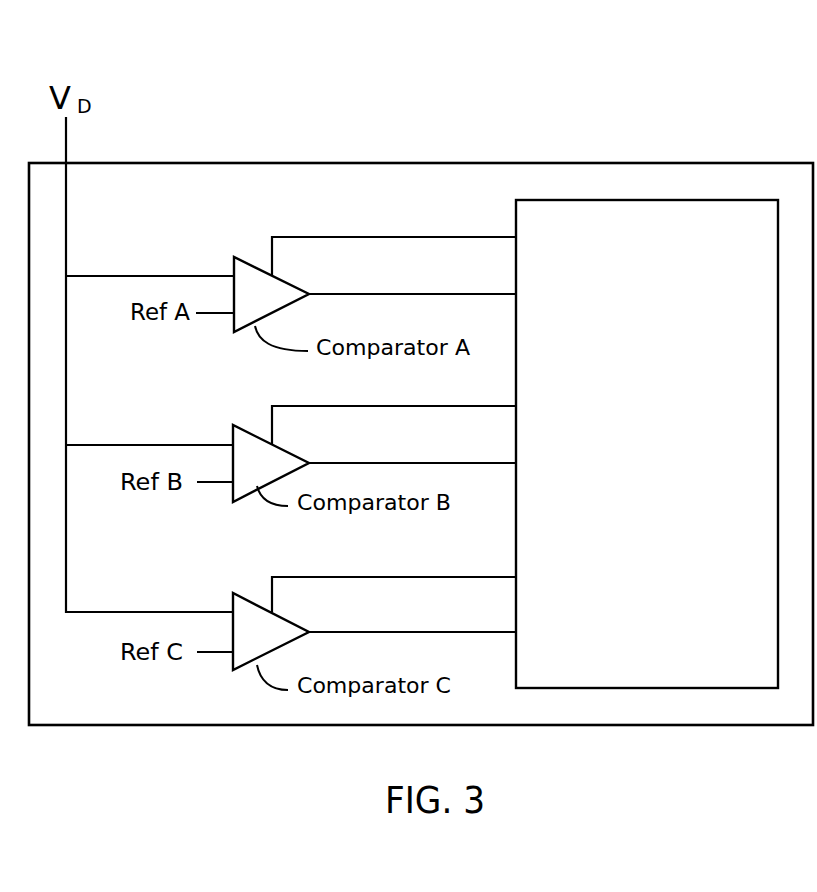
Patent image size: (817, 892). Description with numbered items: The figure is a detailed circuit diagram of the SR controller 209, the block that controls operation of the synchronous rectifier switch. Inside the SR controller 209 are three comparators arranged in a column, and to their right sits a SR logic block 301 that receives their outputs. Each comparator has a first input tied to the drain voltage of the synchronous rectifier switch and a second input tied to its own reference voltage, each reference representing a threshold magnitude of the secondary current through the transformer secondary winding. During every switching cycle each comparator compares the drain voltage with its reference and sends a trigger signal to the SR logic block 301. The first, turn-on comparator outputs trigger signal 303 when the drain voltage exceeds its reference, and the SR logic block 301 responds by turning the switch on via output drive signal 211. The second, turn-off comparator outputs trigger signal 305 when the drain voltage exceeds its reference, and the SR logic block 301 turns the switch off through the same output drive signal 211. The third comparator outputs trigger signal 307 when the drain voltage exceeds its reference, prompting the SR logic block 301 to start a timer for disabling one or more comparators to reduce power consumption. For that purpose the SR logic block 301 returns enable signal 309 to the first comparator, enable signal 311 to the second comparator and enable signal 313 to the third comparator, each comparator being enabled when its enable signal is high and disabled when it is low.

The output drive signal 211 is at (422, 163).
The SR controller 209 is at (181, 190).
The SR logic block 301 is at (647, 444).
The trigger signal 303 is at (412, 283).
The enable signal 309 is at (394, 244).
The trigger signal 305 is at (412, 452).
The enable signal 311 is at (394, 413).
The trigger signal 307 is at (412, 621).
The enable signal 313 is at (394, 583).